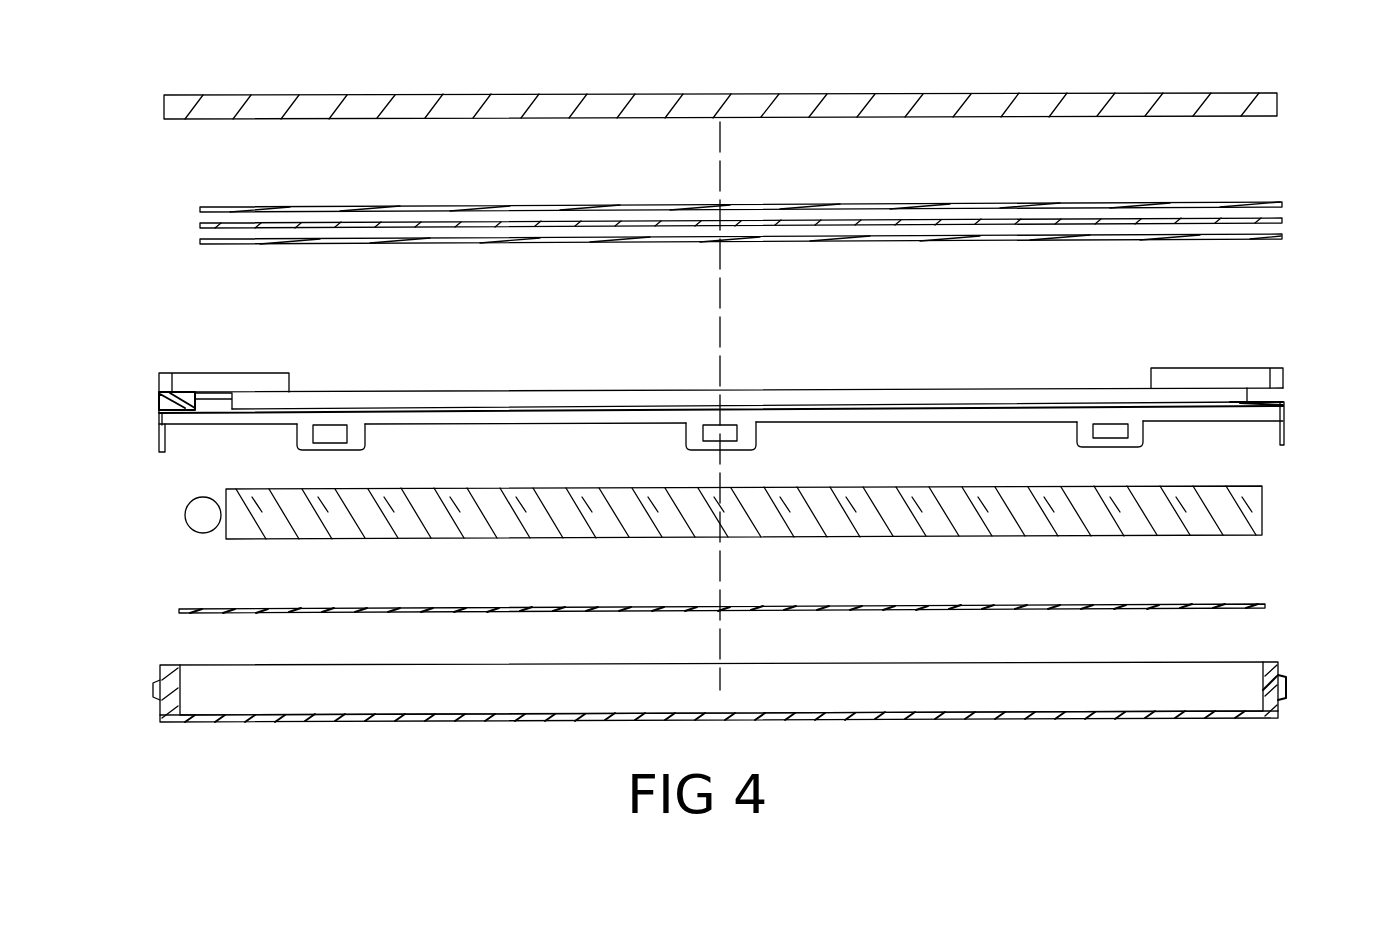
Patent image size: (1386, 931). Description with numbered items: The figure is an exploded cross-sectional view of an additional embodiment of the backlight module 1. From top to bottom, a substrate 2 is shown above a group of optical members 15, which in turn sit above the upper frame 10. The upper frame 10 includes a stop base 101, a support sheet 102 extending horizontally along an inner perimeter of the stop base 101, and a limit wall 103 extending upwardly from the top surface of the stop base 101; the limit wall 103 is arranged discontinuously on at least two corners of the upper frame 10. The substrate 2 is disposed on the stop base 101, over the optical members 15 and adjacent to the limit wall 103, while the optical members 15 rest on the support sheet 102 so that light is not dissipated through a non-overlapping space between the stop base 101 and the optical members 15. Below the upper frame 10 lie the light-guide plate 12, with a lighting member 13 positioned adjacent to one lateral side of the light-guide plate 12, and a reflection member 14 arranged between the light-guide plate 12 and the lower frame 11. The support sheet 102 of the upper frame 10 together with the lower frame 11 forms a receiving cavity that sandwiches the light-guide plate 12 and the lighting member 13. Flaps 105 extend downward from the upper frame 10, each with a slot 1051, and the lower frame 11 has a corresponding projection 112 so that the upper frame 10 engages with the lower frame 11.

The backlight module 1 is at (115, 203).
The substrate 2 is at (1278, 103).
The upper frame 10 is at (771, 398).
The stop base 101 is at (1253, 393).
The support sheet 102 is at (1283, 404).
The limit wall 103 is at (1206, 376).
The flap 105 is at (748, 444).
The slot 1051 is at (728, 432).
The lower frame 11 is at (766, 691).
The projection 112 is at (1287, 677).
The light-guide plate 12 is at (1263, 513).
The lighting member 13 is at (185, 514).
The reflection member 14 is at (1266, 606).
The optical members 15 is at (1293, 200).